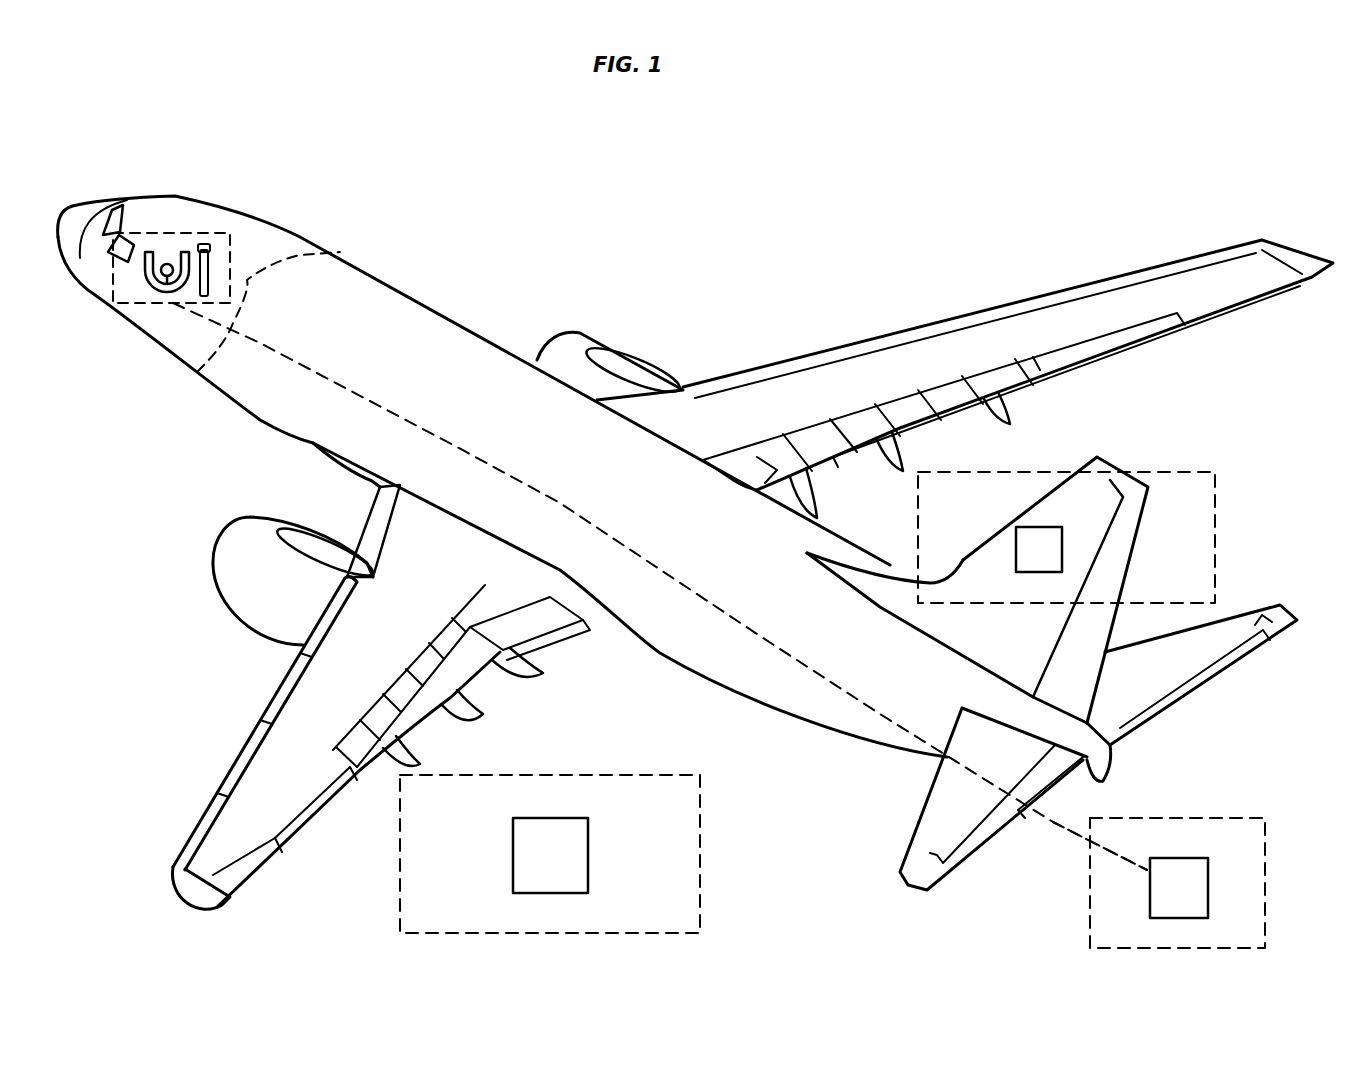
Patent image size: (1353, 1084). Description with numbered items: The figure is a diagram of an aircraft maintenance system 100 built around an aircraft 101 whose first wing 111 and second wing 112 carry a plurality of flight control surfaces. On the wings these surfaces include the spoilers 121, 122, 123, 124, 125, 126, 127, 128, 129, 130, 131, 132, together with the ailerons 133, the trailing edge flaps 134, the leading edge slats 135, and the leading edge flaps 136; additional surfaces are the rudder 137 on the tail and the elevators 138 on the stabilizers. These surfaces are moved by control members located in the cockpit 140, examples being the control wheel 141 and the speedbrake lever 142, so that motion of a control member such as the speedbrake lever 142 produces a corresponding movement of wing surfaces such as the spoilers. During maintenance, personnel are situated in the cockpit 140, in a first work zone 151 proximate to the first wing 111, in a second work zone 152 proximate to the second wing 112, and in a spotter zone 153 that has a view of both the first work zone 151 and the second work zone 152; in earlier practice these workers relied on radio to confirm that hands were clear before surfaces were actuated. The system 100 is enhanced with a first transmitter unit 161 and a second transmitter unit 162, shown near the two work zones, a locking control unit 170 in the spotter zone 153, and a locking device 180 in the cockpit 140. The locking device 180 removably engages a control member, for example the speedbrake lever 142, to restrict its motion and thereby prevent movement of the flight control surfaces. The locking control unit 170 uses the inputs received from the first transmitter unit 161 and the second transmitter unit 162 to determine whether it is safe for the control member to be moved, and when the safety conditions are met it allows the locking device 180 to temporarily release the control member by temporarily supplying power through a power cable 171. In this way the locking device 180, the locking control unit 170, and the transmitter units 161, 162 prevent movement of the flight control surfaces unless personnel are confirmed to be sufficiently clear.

The aircraft maintenance system 100 is at (805, 140).
The aircraft 101 is at (438, 328).
The first wing 111 is at (370, 740).
The second wing 112 is at (1112, 275).
The spoiler 121 is at (355, 740).
The spoiler 122 is at (380, 713).
The spoiler 123 is at (402, 693).
The spoiler 124 is at (423, 667).
The spoiler 125 is at (445, 645).
The spoiler 126 is at (510, 608).
The spoiler 127 is at (757, 457).
The spoiler 128 is at (810, 435).
The spoiler 129 is at (860, 420).
The spoiler 130 is at (905, 400).
The spoiler 131 is at (945, 385).
The spoiler 132 is at (995, 370).
The aileron 133 is at (310, 826).
The trailing edge flap 134 is at (555, 642).
The leading edge slat 135 is at (290, 685).
The leading edge flap 136 is at (372, 525).
The rudder 137 is at (1110, 672).
The elevator 138 is at (993, 813).
The cockpit 140 is at (170, 224).
The control wheel 141 is at (150, 283).
The speedbrake lever 142 is at (204, 242).
The first work zone 151 is at (706, 876).
The second work zone 152 is at (1217, 492).
The spotter zone 153 is at (1267, 898).
The first transmitter unit 161 is at (590, 840).
The second transmitter unit 162 is at (1064, 542).
The locking control unit 170 is at (1190, 858).
The power cable 171 is at (1050, 824).
The locking device 180 is at (232, 252).